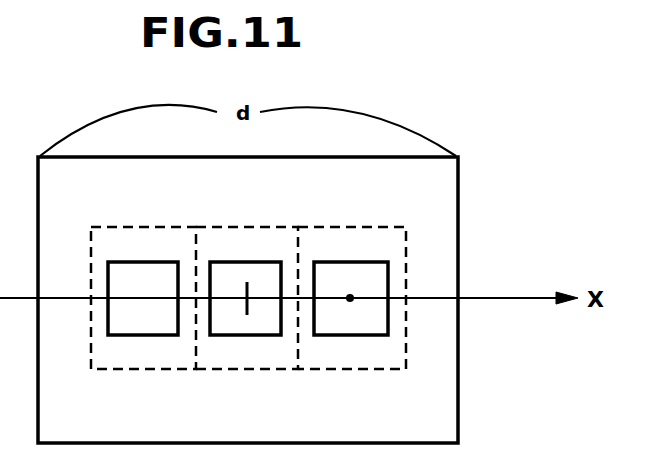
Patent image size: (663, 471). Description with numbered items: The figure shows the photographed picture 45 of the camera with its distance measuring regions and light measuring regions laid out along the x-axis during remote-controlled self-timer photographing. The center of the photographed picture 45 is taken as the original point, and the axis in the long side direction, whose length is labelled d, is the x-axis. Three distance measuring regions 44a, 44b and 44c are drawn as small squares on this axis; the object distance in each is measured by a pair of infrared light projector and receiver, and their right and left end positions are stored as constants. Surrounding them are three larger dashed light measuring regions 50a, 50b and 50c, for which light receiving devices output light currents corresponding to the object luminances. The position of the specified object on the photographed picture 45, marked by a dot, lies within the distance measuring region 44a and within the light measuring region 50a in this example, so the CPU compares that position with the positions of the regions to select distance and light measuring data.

The photographed picture 45 is at (459, 190).
The distance measuring region 44a is at (355, 261).
The distance measuring region 44b is at (243, 261).
The distance measuring region 44c is at (143, 261).
The light measuring region 50a is at (363, 369).
The light measuring region 50b is at (248, 369).
The light measuring region 50c is at (131, 369).